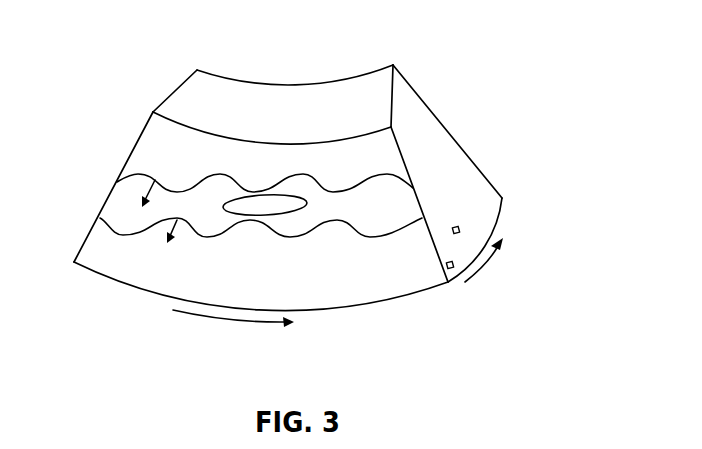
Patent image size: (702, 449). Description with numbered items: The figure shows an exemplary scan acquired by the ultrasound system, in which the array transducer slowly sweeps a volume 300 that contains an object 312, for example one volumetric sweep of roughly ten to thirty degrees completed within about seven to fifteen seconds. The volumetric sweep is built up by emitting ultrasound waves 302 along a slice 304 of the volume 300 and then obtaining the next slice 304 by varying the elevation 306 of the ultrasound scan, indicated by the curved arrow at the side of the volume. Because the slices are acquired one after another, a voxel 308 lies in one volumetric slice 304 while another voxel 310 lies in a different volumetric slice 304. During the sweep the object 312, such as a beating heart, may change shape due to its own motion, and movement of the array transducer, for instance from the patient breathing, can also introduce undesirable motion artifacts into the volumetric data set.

The volume 300 is at (136, 42).
The ultrasound waves 302 is at (223, 174).
The slice 304 is at (227, 318).
The elevation 306 is at (482, 272).
The voxel 308 is at (451, 271).
The voxel 310 is at (455, 226).
The object 312 is at (262, 218).